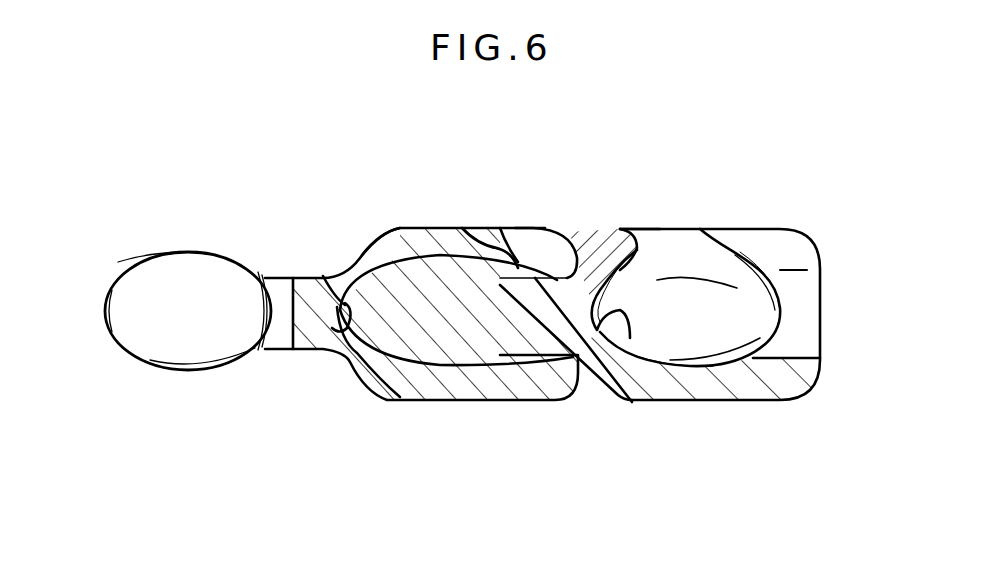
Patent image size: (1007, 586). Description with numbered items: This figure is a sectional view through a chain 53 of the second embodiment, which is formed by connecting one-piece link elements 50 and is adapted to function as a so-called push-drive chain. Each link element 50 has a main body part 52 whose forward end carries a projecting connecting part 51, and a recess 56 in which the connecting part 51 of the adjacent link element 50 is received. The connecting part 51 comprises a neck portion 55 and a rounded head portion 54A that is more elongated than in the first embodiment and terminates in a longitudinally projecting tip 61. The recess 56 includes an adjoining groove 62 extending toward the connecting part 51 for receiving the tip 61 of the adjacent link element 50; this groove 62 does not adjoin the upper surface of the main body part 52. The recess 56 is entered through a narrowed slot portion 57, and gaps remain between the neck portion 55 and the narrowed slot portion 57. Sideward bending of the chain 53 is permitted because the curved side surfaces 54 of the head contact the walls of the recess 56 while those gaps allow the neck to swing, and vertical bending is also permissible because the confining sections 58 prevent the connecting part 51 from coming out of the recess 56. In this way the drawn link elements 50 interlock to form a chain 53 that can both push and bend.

The link element 50 is at (348, 235).
The connecting part 51 is at (210, 248).
The main body part 52 is at (372, 222).
The chain 53 is at (527, 213).
The curved side surfaces 54 is at (187, 352).
The rounded head portion 54A is at (148, 250).
The neck portion 55 is at (277, 288).
The recess 56 is at (405, 367).
The narrowed slot portion 57 is at (803, 327).
The confining sections 58 is at (493, 236).
The tip 61 is at (105, 318).
The groove 62 is at (343, 323).